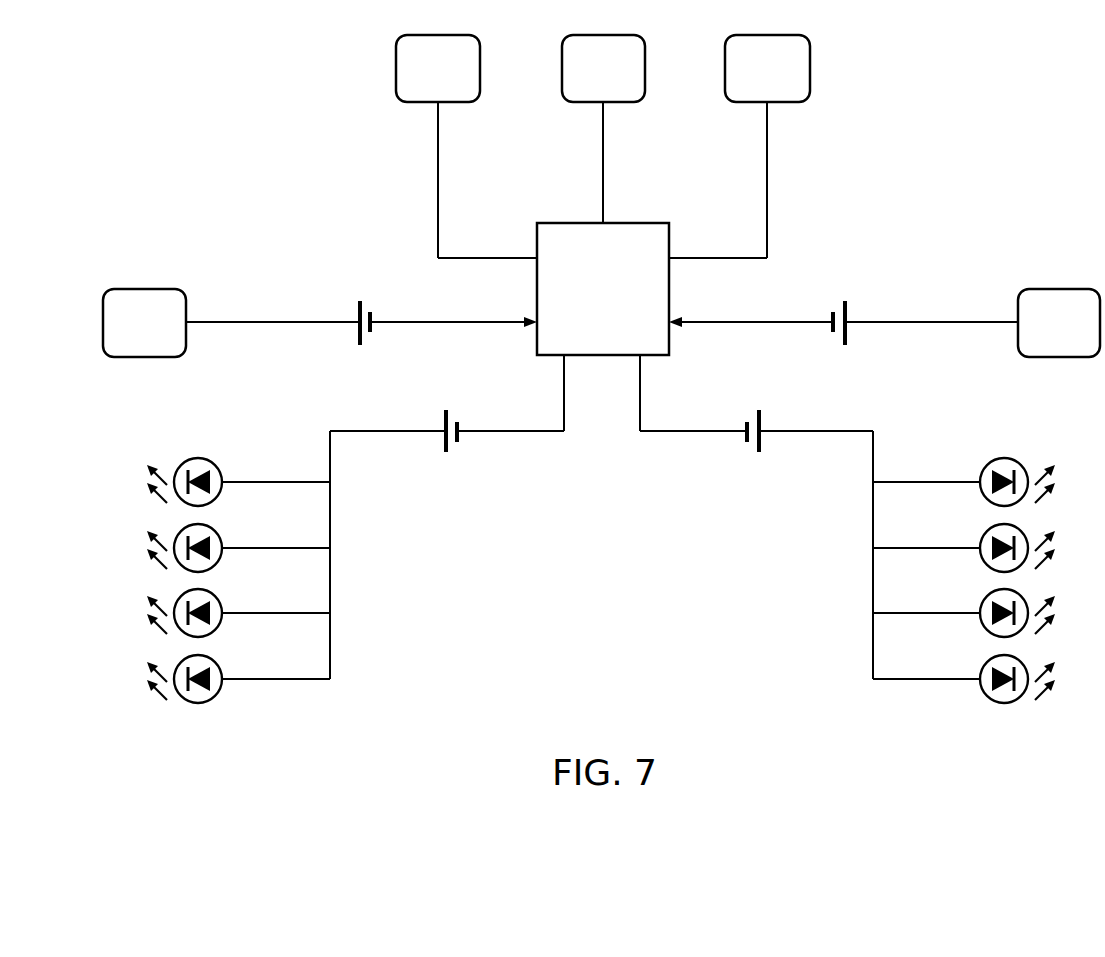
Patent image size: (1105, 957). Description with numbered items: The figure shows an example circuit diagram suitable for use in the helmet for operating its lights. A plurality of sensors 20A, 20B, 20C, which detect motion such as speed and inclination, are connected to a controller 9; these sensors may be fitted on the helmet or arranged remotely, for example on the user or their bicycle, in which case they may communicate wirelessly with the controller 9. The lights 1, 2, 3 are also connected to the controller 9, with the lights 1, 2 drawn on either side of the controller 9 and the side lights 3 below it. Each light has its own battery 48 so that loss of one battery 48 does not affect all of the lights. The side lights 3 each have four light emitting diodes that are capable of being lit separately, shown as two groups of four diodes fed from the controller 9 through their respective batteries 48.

The light 1 is at (320, 323).
The light 2 is at (884, 323).
The side lights 3 is at (332, 640).
The controller 9 is at (603, 289).
The sensor 20A is at (466, 146).
The sensor 20B is at (603, 129).
The sensor 20C is at (739, 146).
The battery 48 is at (360, 301).